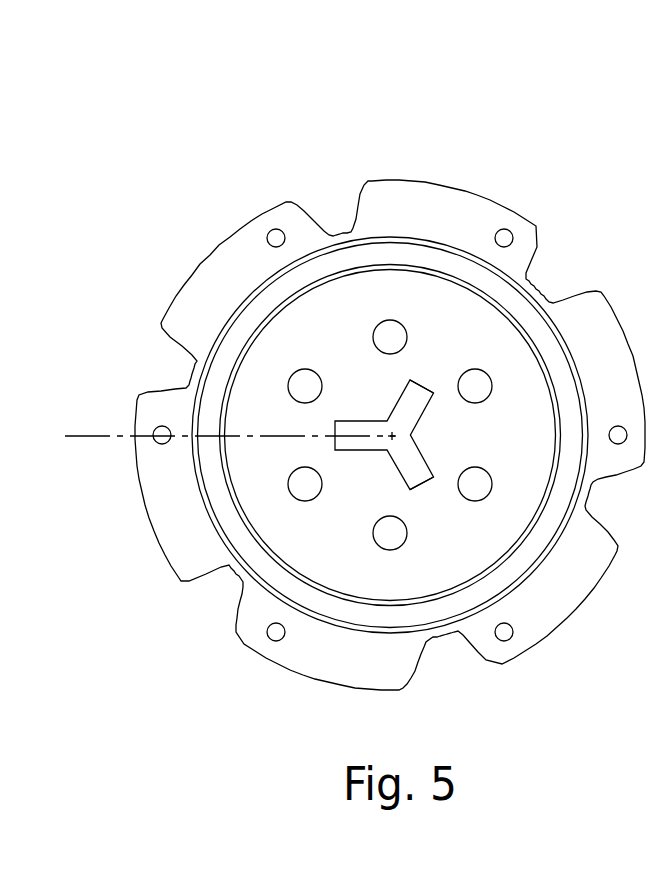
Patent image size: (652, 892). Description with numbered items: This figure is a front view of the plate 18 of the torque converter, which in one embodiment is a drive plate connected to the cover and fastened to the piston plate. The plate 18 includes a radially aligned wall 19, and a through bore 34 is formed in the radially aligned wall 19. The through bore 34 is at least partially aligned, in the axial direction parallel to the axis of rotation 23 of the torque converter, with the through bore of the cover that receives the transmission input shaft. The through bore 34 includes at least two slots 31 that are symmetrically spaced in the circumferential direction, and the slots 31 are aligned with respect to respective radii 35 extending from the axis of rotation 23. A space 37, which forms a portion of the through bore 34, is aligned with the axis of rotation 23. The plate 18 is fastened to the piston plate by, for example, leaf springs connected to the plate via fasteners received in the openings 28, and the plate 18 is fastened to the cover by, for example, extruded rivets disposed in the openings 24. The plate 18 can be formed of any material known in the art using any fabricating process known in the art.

The plate 18 is at (162, 162).
The radially aligned wall 19 is at (257, 405).
The axis of rotation 23 is at (408, 416).
The openings 24 is at (395, 321).
The openings 28 is at (276, 229).
The slots 31 is at (417, 477).
The through bore 34 is at (437, 363).
The radii 35 is at (82, 436).
The space 37 is at (387, 421).